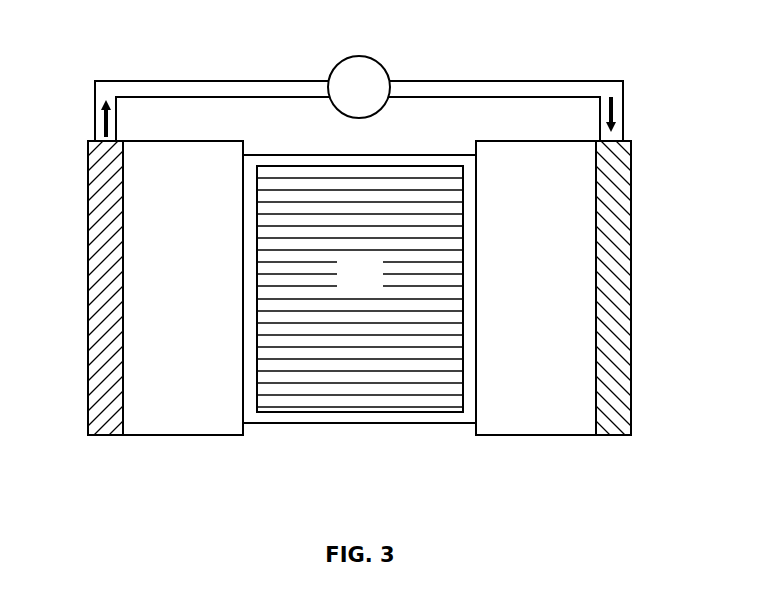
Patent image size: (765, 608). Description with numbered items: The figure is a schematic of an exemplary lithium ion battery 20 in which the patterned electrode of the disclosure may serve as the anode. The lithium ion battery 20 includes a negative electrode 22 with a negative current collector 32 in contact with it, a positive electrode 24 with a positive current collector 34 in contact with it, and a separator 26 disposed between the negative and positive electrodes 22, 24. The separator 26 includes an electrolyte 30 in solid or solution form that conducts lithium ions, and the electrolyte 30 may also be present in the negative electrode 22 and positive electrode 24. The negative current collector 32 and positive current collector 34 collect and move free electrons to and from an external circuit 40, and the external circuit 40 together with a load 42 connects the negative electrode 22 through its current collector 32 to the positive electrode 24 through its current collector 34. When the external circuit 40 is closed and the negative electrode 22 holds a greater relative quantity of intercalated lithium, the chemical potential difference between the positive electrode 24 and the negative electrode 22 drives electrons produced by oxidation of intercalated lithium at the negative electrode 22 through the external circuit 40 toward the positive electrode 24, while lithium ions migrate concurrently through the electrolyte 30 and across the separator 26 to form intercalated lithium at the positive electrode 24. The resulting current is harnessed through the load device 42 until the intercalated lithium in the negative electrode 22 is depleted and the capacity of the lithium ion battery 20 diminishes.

The lithium ion battery 20 is at (95, 41).
The negative electrode 22 is at (168, 267).
The positive electrode 24 is at (526, 262).
The separator 26 is at (357, 424).
The electrolyte 30 is at (348, 287).
The negative current collector 32 is at (87, 208).
The positive current collector 34 is at (633, 203).
The external circuit 40 is at (213, 80).
The load device 42 is at (348, 95).